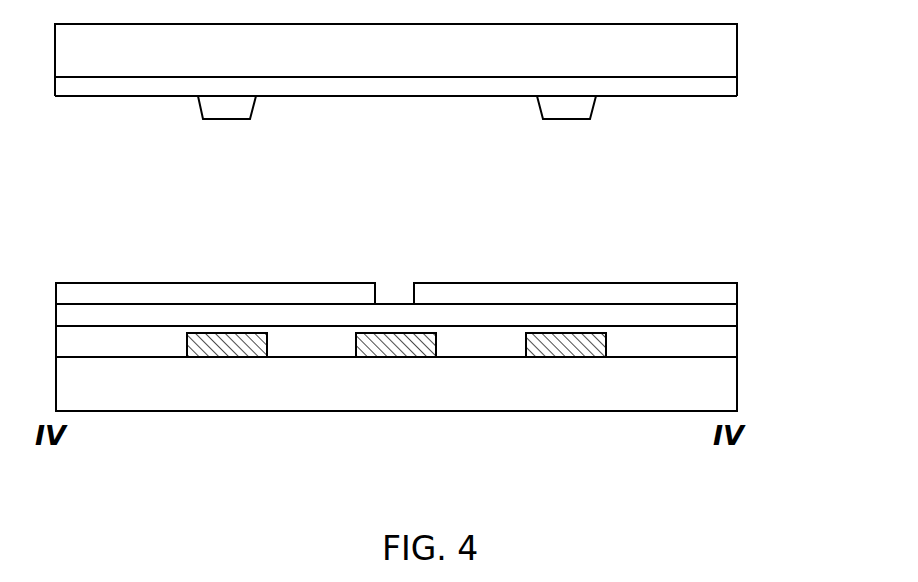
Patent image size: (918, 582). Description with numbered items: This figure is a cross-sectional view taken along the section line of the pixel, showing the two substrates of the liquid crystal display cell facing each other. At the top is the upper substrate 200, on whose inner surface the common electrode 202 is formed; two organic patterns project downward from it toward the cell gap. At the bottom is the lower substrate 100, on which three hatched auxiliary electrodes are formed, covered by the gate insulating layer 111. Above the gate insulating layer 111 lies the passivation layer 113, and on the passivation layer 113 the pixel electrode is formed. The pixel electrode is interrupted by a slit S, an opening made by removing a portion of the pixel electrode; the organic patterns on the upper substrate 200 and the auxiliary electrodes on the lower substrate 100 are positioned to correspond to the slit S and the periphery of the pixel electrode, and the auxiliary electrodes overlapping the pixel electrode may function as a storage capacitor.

The upper substrate 200 is at (708, 58).
The common electrode 202 is at (470, 96).
The lower substrate 100 is at (703, 397).
The gate insulating layer 111 is at (720, 345).
The passivation layer 113 is at (725, 312).
The slit S is at (400, 272).